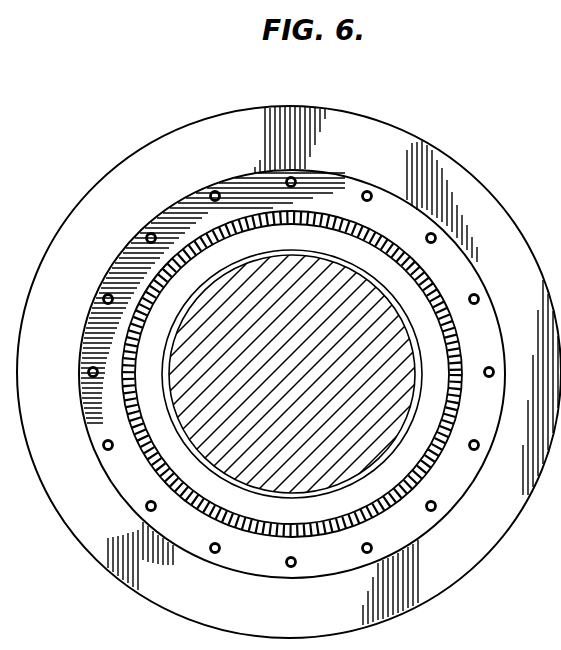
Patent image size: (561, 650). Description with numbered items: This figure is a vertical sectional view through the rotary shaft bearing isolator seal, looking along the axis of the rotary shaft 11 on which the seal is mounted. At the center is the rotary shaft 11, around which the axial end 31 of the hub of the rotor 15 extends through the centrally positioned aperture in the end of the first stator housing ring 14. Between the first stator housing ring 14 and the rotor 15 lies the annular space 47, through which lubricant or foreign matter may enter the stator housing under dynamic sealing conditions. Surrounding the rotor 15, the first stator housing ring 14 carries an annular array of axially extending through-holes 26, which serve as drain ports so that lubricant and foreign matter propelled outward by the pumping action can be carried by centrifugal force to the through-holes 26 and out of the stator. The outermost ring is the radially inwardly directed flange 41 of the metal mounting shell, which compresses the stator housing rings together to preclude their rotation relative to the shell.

The rotary shaft 11 is at (302, 371).
The first stator housing ring 14 is at (80, 393).
The rotor 15 is at (224, 495).
The through-holes 26 is at (420, 226).
The axial end of the hub of rotor 31 is at (302, 521).
The radially inwardly directed flange 41 is at (152, 193).
The annular space 47 is at (406, 488).